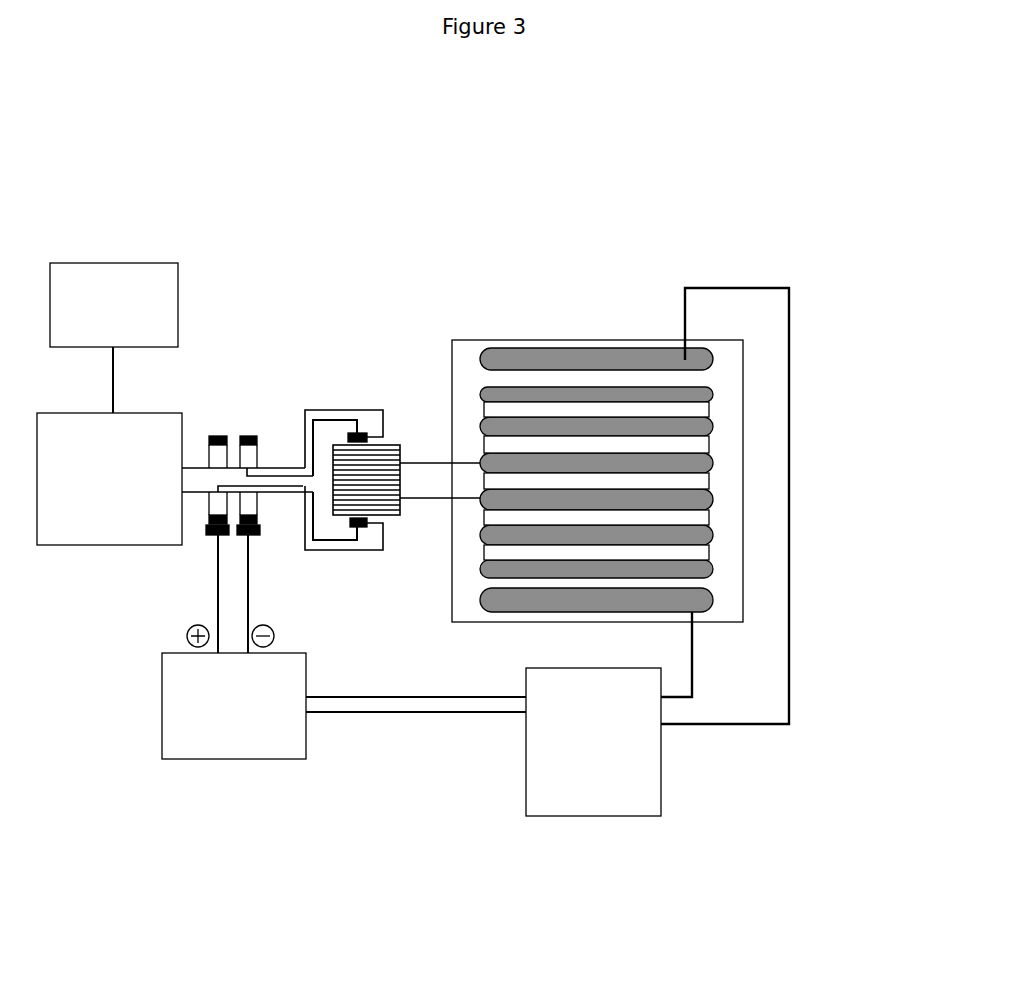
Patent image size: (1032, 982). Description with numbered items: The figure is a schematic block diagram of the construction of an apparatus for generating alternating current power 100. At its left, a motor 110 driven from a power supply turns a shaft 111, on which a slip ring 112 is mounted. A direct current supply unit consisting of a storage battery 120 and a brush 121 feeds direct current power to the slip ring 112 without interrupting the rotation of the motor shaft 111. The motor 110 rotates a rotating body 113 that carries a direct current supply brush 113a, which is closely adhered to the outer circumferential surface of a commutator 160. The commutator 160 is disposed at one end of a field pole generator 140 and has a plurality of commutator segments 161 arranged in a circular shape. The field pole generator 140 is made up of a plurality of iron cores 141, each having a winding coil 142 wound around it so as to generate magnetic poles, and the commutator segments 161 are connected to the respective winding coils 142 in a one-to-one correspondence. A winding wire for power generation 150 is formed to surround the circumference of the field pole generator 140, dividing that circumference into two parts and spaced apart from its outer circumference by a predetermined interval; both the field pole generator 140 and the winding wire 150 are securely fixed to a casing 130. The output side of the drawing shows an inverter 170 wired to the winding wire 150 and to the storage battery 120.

The apparatus for generating alternating current power 100 is at (448, 247).
The motor 110 is at (158, 430).
The shaft 111 is at (197, 472).
The slip ring 112 is at (206, 528).
The rotating body 113 is at (341, 410).
The direct current supply brush 113a is at (380, 437).
The storage battery 120 is at (237, 759).
The brush 121 is at (214, 538).
The casing 130 is at (625, 342).
The field pole generator 140 is at (718, 478).
The iron core 141 is at (705, 443).
The winding coil 142 is at (705, 534).
The winding wire for power generation 150 is at (562, 362).
The commutator 160 is at (393, 518).
The commutator segments 161 is at (406, 517).
The inverter 170 is at (590, 816).